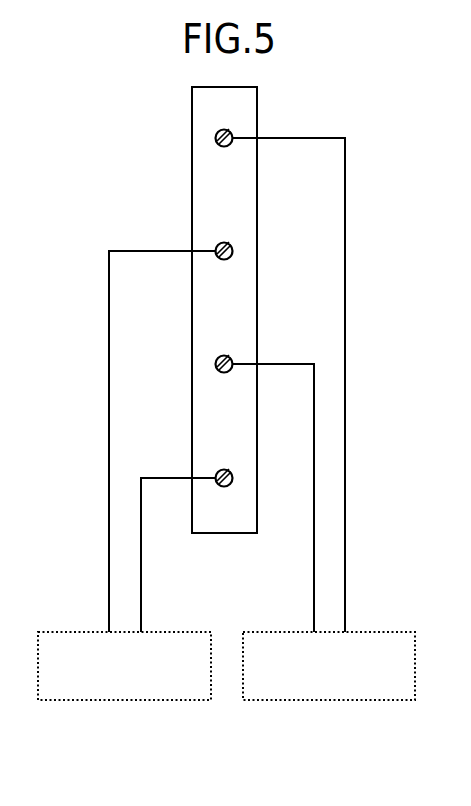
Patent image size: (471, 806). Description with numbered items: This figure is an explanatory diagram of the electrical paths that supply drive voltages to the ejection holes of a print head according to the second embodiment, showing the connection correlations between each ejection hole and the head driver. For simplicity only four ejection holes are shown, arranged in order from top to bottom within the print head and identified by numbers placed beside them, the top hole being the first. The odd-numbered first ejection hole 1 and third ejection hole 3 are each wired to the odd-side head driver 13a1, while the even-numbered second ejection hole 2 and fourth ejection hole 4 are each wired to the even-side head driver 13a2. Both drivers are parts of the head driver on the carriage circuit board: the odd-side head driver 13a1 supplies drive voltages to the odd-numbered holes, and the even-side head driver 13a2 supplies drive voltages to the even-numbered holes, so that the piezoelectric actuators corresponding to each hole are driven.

The first ejection hole 1 is at (256, 379).
The second ejection hole 2 is at (194, 435).
The third ejection hole 3 is at (240, 492).
The fourth ejection hole 4 is at (210, 549).
The even-side head driver 13a2 is at (92, 700).
The odd-side head driver 13a1 is at (357, 700).